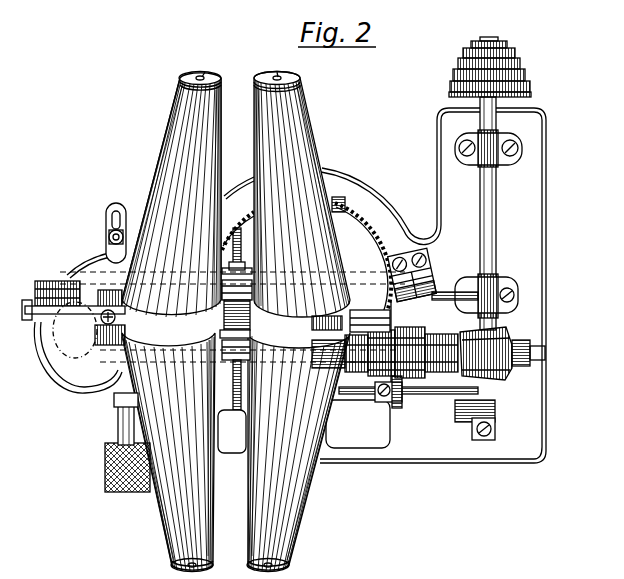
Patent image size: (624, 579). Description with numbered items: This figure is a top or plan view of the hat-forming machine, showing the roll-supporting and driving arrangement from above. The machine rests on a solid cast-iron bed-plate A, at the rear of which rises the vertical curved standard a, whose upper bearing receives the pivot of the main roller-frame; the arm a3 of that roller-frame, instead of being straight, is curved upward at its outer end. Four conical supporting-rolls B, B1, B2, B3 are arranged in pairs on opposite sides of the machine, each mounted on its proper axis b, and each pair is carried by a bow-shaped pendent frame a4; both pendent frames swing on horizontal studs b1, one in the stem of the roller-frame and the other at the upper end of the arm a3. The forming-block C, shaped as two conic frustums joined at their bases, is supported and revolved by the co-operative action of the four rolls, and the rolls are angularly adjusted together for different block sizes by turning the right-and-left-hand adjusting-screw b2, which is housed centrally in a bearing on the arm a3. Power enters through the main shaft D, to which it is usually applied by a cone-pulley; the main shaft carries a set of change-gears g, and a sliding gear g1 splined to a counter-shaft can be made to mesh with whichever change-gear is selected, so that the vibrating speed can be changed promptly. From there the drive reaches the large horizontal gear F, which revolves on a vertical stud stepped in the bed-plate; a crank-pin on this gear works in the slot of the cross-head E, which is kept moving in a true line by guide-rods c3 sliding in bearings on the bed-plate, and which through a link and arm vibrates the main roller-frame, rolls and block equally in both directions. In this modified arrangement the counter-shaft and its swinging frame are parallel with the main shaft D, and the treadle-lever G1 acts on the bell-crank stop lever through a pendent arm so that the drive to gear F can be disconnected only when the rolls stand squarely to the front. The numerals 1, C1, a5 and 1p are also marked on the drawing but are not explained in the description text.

The bed-plate A is at (306, 285).
The standard of frame with pulley shaft 1 is at (486, 183).
The conical supporting-roll B is at (171, 195).
The conical supporting-roll B1 is at (302, 195).
The conical supporting-roll B2 is at (168, 452).
The conical supporting-roll B3 is at (298, 452).
The roll axis b is at (234, 319).
The horizontal studs b1 is at (396, 300).
The adjusting-screw b2 is at (100, 266).
The forming-block C is at (117, 228).
The pivot bolt C1 is at (108, 236).
The guide-rods c3 is at (455, 288).
The main shaft D is at (527, 353).
The cross-head E is at (338, 196).
The horizontal gear F is at (306, 259).
The treadle-lever G1 is at (126, 442).
The vertical curved standard a is at (73, 337).
The arm of roller-frame a3 is at (327, 322).
The pendent frame a4 is at (232, 362).
The bearing cap a5 is at (370, 321).
The change-gears g is at (385, 345).
The sliding gear g1 is at (402, 402).
The bearing 1p is at (475, 420).